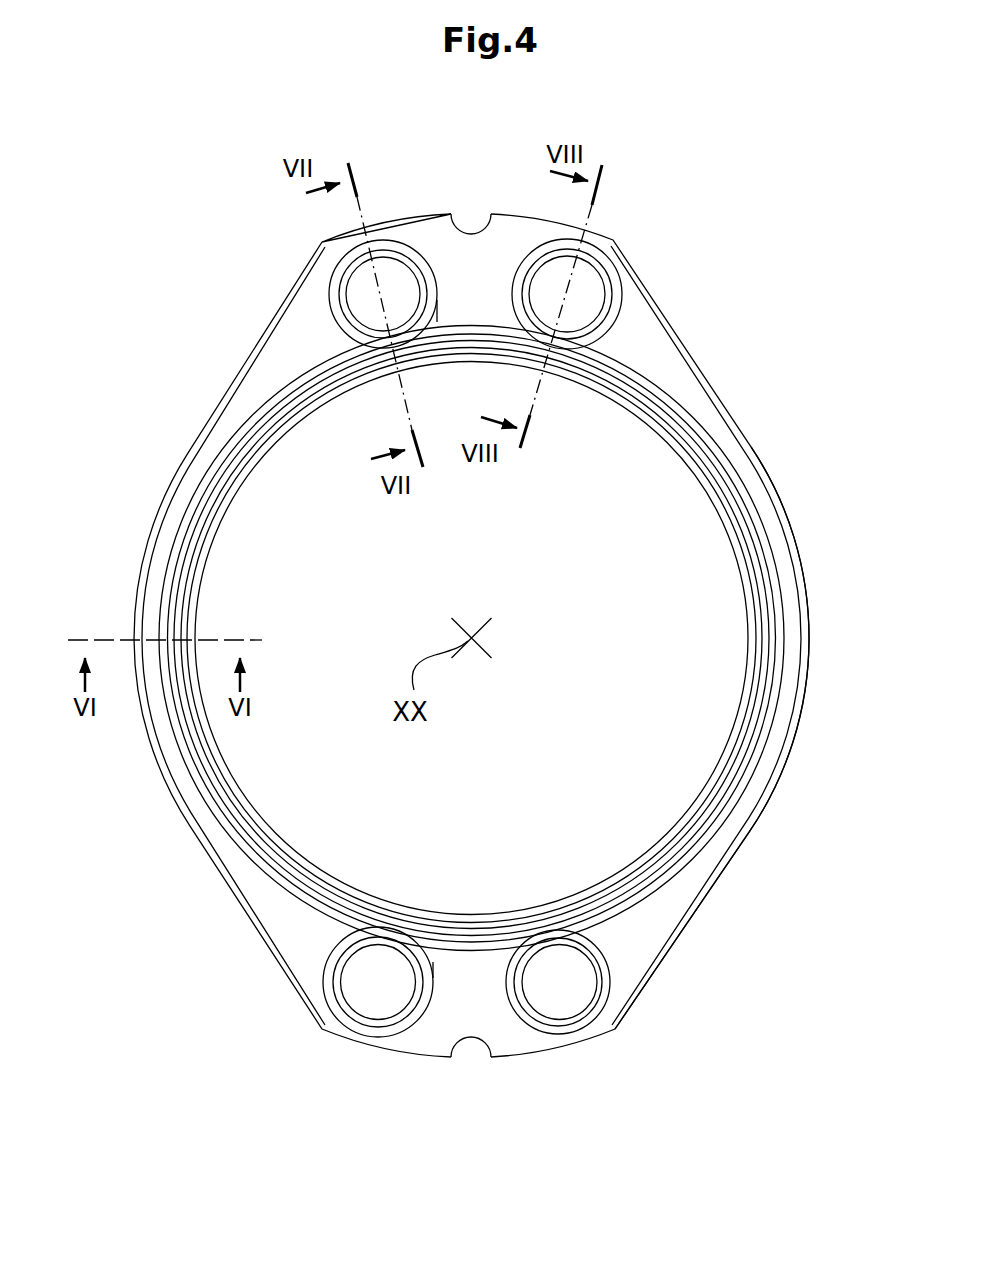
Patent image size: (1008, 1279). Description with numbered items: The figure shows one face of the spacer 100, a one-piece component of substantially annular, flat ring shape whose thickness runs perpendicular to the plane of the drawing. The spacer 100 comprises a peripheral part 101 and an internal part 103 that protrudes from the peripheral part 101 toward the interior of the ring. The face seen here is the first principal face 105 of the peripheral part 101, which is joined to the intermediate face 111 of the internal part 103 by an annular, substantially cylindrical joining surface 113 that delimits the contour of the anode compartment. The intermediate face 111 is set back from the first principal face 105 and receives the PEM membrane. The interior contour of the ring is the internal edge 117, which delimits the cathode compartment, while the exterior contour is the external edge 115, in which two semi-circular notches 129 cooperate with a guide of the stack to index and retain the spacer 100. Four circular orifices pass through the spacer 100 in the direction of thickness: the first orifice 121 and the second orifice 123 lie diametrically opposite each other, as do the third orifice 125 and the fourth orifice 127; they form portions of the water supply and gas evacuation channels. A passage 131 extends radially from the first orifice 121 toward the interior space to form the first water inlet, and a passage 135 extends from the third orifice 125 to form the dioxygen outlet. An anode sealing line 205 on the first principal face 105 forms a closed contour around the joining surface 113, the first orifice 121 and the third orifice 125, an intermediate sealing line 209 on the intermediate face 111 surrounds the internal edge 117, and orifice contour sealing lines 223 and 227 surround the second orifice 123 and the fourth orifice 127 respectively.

The spacer 100 is at (248, 288).
The peripheral part 101 is at (777, 494).
The internal part 103 is at (714, 512).
The first principal face 105 is at (800, 578).
The intermediate face 111 is at (748, 606).
The joining surface 113 is at (766, 664).
The external edge 115 is at (749, 829).
The internal edge 117 is at (702, 794).
The first orifice 121 is at (557, 1005).
The second orifice 123 is at (356, 984).
The third orifice 125 is at (388, 280).
The fourth orifice 127 is at (583, 284).
The notch 129 is at (472, 232).
The passage 131 is at (522, 938).
The passage 135 is at (368, 348).
The anode sealing line 205 is at (668, 392).
The intermediate sealing line 209 is at (686, 440).
The orifice contour sealing line 223 is at (379, 1037).
The orifice contour sealing line 227 is at (623, 297).